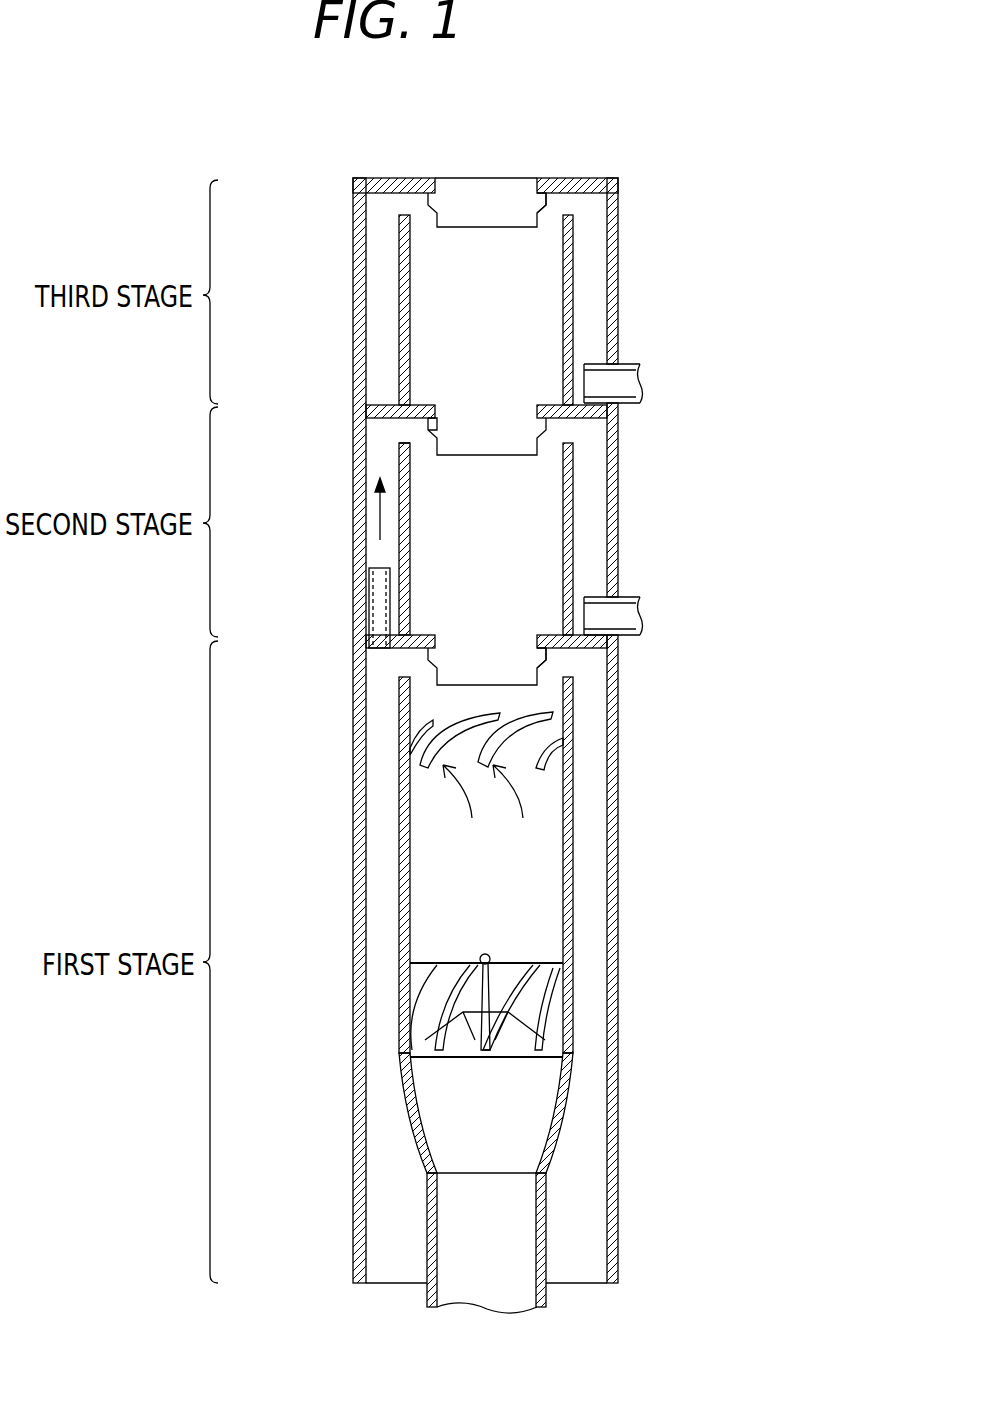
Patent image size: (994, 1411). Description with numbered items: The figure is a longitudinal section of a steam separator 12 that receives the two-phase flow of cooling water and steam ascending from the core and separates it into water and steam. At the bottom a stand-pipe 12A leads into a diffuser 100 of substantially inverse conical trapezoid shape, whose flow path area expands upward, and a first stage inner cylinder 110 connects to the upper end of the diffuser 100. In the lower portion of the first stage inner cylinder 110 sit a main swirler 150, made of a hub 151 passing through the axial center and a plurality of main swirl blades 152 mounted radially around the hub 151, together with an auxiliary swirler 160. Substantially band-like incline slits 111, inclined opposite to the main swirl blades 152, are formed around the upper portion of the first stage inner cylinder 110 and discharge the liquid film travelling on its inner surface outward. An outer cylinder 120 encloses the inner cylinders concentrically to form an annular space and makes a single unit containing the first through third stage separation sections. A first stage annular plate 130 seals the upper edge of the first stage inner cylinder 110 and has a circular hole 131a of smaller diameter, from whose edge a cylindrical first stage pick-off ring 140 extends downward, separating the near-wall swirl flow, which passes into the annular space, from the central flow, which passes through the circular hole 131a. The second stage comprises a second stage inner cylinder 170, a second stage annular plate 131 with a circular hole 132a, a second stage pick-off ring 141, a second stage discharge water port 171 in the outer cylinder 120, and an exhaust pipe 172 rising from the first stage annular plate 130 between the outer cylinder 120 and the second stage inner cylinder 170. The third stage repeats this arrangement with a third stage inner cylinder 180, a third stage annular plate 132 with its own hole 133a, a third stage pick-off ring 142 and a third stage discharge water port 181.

The steam separator 12 is at (618, 150).
The inlet pipe 12A is at (548, 1306).
The diffuser 100 is at (556, 1128).
The first stage inner cylinder 110 is at (573, 818).
The incline slits 111 is at (437, 711).
The outer cylinder 120 is at (618, 874).
The first stage annular plate 130 is at (590, 649).
The second stage annular plate 131 is at (387, 404).
The third stage annular plate 132 is at (597, 178).
The circular hole 131a is at (527, 635).
The circular hole 132a is at (527, 405).
The opening of top plate 133a is at (522, 180).
The first stage pick-off ring 140 is at (545, 658).
The second stage pick-off ring 141 is at (397, 437).
The third stage pick-off ring 142 is at (547, 204).
The main swirler 150 is at (471, 1025).
The hub 151 is at (480, 957).
The main swirl blades 152 is at (410, 1027).
The auxiliary swirler 160 is at (505, 1040).
The second stage inner cylinder 170 is at (573, 537).
The second stage discharge water port 171 is at (623, 597).
The exhaust pipe 172 is at (370, 598).
The third stage inner cylinder 180 is at (574, 306).
The third stage discharge water port 181 is at (623, 366).